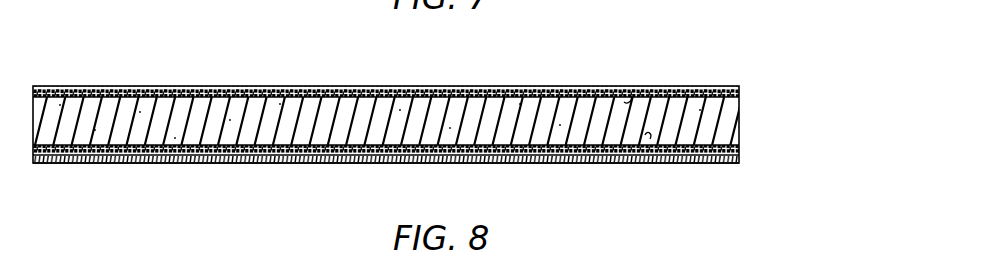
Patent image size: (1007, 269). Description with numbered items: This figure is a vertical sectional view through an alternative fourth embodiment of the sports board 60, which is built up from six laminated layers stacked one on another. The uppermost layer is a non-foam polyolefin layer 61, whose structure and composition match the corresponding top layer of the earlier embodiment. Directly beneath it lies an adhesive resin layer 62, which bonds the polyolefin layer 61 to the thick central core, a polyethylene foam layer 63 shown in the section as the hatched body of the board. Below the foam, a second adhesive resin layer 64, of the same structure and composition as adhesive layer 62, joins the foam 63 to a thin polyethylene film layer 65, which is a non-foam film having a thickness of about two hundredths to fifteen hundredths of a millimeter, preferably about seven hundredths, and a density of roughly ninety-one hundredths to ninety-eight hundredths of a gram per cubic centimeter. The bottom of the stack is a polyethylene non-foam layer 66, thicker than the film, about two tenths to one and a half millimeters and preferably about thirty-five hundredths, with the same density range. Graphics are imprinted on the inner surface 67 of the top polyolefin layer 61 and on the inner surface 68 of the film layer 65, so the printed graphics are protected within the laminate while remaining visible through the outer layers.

The sports board 60 is at (115, 68).
The non-foam polyolefin layer 61 is at (723, 82).
The adhesive resin layer 62 is at (740, 87).
The polyethylene foam layer 63 is at (725, 118).
The adhesive resin layer 64 is at (738, 147).
The polyethylene film layer 65 is at (738, 153).
The polyethylene non-foam layer 66 is at (738, 158).
The inner surface 67 is at (624, 102).
The inner surface 68 is at (645, 135).